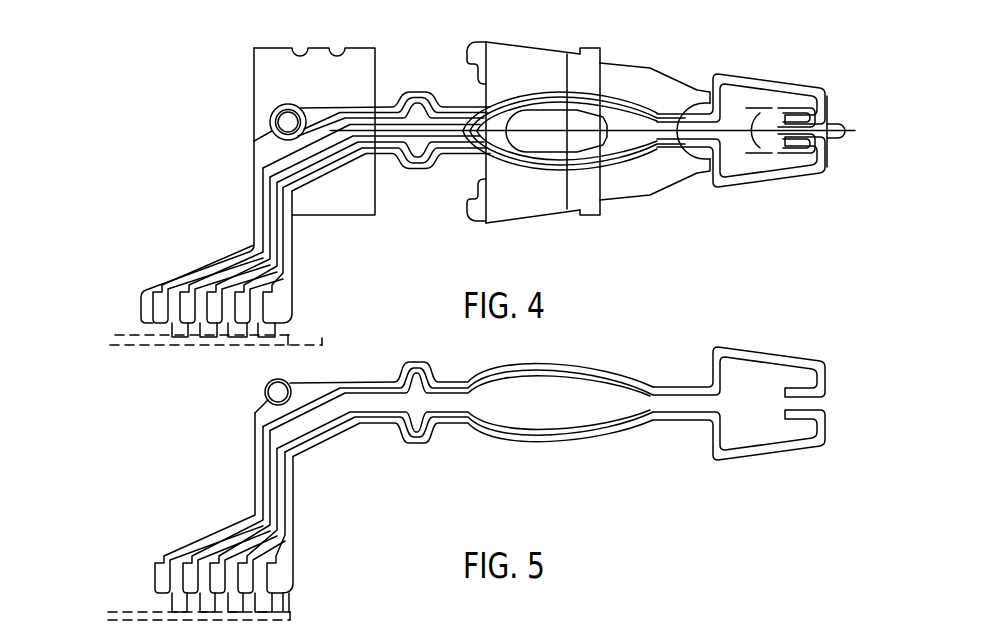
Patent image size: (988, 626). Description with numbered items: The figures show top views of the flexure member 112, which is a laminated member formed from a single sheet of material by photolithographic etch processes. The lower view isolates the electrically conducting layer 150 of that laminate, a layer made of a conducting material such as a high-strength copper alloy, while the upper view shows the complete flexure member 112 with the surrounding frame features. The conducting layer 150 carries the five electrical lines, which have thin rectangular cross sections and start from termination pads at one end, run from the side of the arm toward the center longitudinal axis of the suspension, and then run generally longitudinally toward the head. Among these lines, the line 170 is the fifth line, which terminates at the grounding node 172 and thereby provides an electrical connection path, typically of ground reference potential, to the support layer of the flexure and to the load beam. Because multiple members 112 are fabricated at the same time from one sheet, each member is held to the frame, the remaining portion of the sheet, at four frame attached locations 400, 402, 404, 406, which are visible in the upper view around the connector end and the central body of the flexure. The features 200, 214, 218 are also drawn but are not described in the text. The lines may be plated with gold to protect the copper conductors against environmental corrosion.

In FIG. 4, the flexure member 112 is at (115, 45).
In FIG. 4, the frame attached location 402 is at (318, 48).
In FIG. 4, the grounding node 172 is at (273, 107).
In FIG. 5, the grounding node 172 is at (266, 384).
In FIG. 4, the line 170 is at (255, 138).
In FIG. 5, the line 170 is at (255, 428).
In FIG. 4, the frame attached location 400 is at (167, 347).
In FIG. 4, the sensor window 200 is at (537, 122).
In FIG. 4, the frame attached location 404 is at (590, 50).
In FIG. 4, the frame attached location 406 is at (588, 216).
In FIG. 5, the electrically conducting layer 150 is at (777, 457).
In FIG. 5, the flex circuit portion 214 is at (539, 619).
In FIG. 5, the flex circuit portion 218 is at (777, 620).